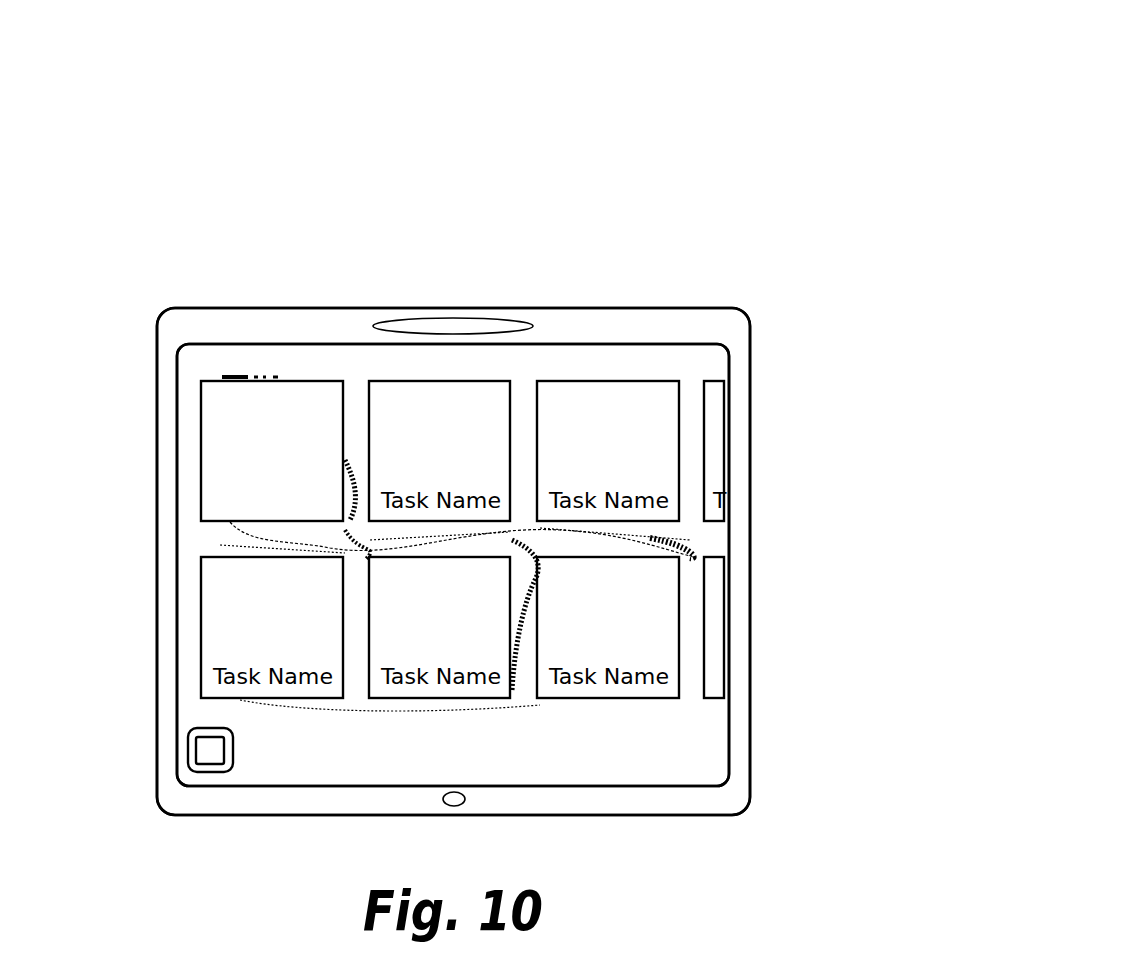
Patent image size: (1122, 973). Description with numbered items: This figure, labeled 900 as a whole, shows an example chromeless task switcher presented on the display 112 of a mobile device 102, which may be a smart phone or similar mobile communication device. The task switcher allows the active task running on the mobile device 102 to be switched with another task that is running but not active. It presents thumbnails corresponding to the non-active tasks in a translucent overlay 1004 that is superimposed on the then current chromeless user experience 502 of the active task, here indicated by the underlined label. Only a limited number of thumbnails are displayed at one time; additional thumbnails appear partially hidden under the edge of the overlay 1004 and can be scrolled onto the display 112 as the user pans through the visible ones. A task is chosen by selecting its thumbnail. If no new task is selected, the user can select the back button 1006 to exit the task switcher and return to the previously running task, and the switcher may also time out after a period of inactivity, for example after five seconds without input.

The user interface environment 900 is at (778, 128).
The mobile device 102 is at (750, 422).
The display 112 is at (729, 520).
The translucent overlay 1004 is at (593, 344).
The back button 1006 is at (189, 730).
The chromeless user experience 502 is at (478, 754).